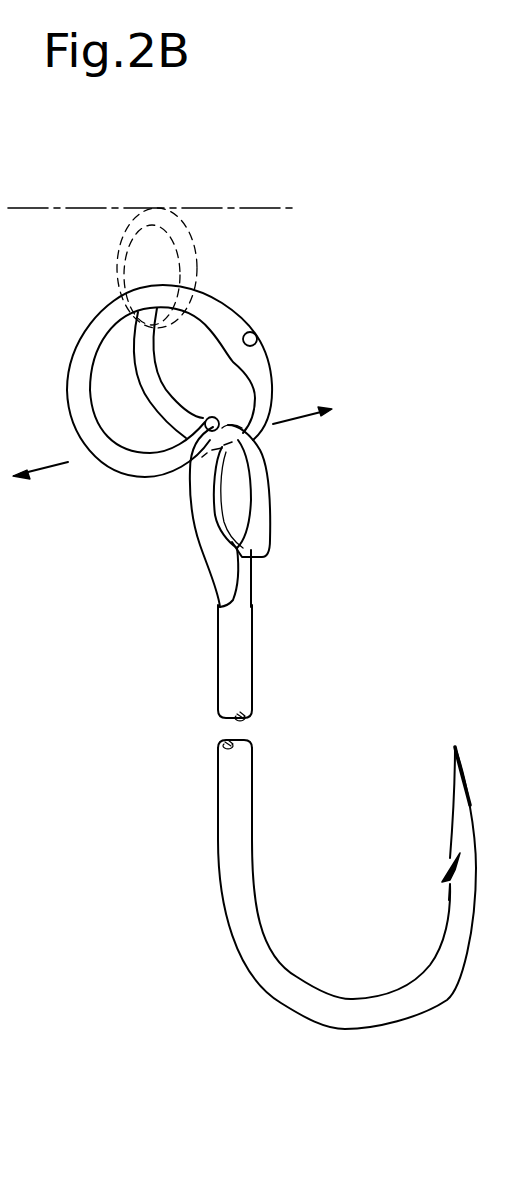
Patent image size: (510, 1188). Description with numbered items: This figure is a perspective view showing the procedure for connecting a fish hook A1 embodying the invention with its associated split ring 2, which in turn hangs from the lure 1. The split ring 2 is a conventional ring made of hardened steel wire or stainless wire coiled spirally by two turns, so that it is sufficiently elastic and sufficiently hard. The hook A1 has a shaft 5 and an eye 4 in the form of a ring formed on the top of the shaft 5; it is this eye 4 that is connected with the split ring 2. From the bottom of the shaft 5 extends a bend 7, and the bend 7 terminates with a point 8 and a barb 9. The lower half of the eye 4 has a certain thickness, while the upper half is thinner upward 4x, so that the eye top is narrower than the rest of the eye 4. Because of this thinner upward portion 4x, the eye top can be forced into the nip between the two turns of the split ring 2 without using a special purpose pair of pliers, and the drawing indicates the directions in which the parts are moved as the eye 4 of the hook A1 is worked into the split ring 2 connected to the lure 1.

The lure 1 is at (75, 185).
The split ring 2 is at (222, 335).
The eye 4 is at (282, 516).
The thinner upward portion of eye 4x is at (250, 437).
The shaft 5 is at (232, 668).
The bend 7 is at (290, 985).
The point 8 is at (455, 747).
The barb 9 is at (442, 883).
The fish hook A1 is at (262, 680).